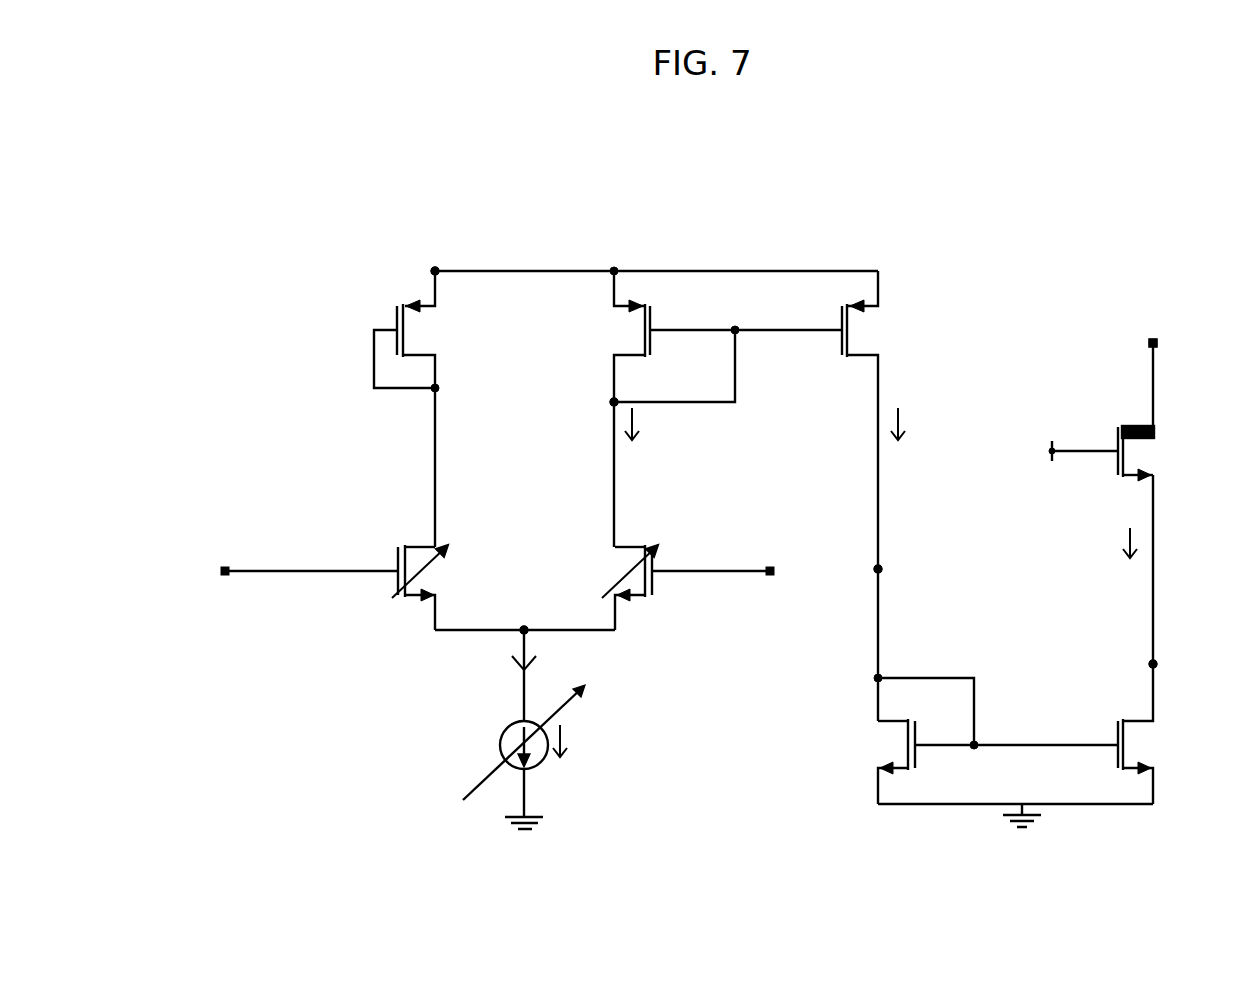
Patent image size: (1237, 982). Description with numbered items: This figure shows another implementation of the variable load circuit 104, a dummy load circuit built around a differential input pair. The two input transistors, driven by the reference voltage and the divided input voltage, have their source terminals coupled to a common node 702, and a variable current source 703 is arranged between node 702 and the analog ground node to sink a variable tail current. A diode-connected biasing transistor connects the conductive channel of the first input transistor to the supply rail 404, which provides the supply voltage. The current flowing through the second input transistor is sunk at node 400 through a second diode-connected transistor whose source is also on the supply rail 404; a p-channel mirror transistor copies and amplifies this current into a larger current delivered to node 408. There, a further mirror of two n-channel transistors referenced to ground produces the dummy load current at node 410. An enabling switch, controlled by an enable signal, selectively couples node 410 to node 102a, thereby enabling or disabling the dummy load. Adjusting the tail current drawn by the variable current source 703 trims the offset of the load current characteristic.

The variable load circuit 104 is at (836, 217).
The supply rail 404 is at (432, 270).
The node 400 is at (611, 404).
The node 702 is at (520, 634).
The variable current source 703 is at (500, 736).
The node 408 is at (884, 569).
The node 410 is at (1158, 664).
The node 102a is at (1153, 339).